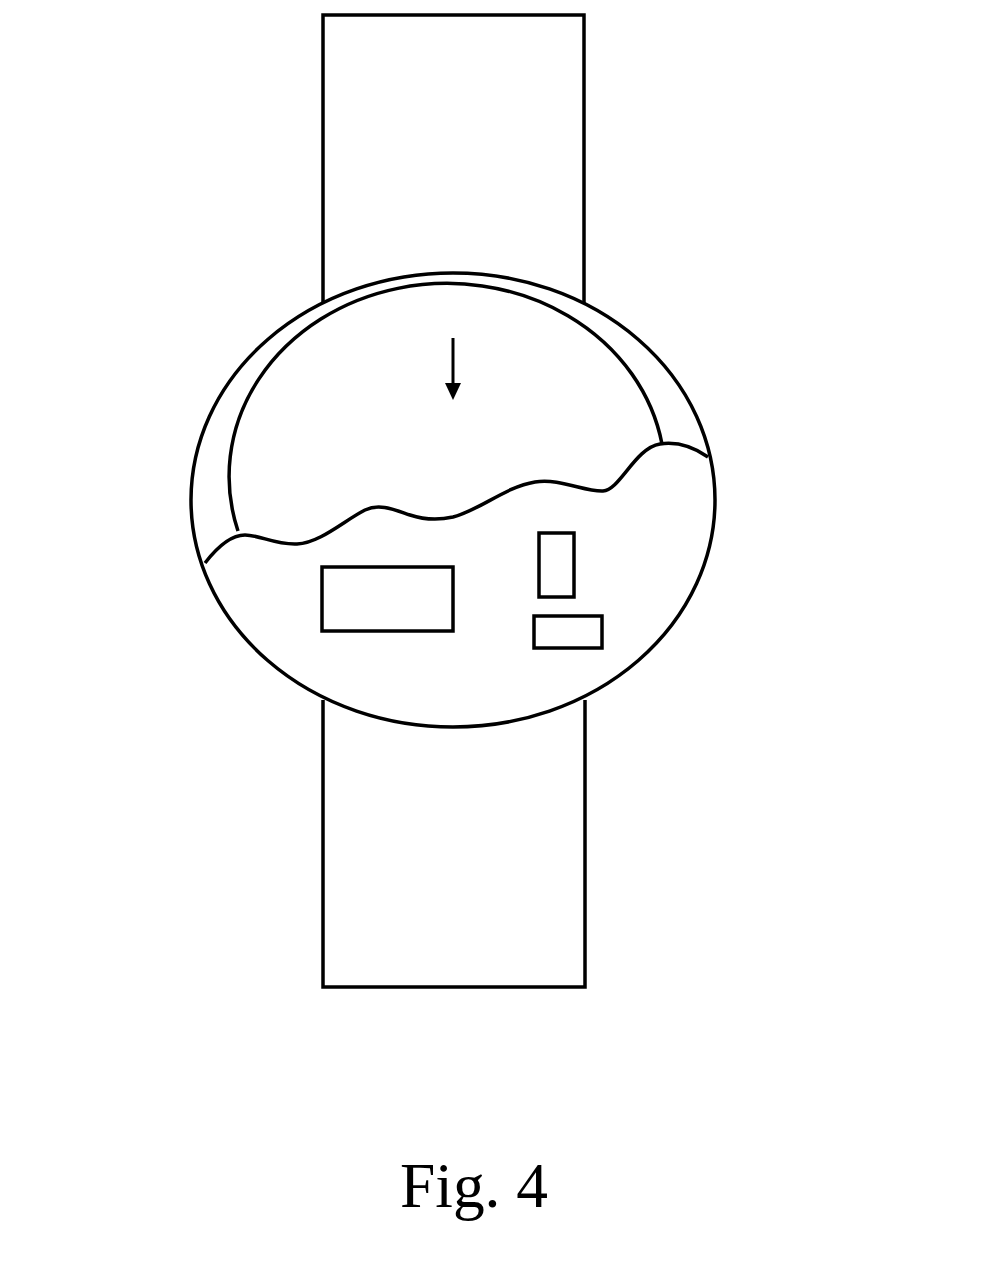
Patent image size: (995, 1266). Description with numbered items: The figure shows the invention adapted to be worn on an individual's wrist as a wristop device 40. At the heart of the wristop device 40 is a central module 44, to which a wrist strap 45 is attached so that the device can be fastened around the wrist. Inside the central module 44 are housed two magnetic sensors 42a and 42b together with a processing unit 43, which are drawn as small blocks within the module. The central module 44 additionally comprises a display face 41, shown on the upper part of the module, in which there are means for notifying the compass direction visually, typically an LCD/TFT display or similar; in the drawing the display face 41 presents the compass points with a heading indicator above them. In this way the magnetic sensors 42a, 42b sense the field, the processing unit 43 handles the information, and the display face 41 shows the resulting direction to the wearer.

The wristop device 40 is at (629, 238).
The display face 41 is at (583, 397).
The magnetic sensor 42a is at (557, 567).
The magnetic sensor 42b is at (573, 637).
The processing unit 43 is at (362, 599).
The central module 44 is at (253, 350).
The wrist strap 45 is at (372, 138).